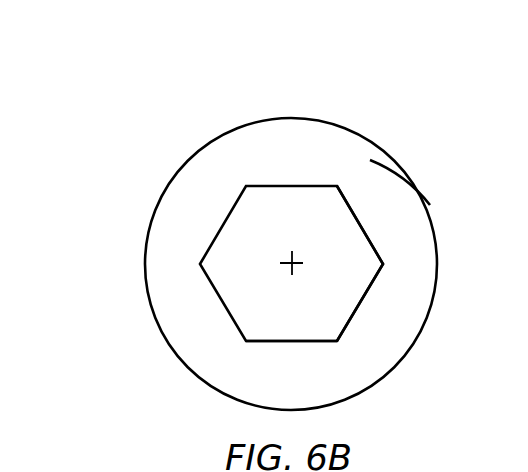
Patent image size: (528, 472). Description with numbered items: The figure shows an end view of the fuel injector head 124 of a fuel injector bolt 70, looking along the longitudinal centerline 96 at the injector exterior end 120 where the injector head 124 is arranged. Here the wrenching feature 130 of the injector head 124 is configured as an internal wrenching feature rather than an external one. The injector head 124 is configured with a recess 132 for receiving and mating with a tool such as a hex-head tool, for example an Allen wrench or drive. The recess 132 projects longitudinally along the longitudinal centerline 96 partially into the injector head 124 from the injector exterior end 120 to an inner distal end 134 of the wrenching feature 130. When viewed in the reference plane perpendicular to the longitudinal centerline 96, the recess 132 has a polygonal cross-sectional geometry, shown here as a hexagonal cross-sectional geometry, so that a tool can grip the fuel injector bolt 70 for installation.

The fuel injector bolt 70 is at (382, 112).
The exterior end 120 is at (415, 285).
The fuel injector head 124 is at (407, 177).
The wrenching feature 130 is at (270, 185).
The recess 132 is at (348, 257).
The inner distal end 134 is at (267, 330).
The longitudinal centerline 96 is at (288, 268).